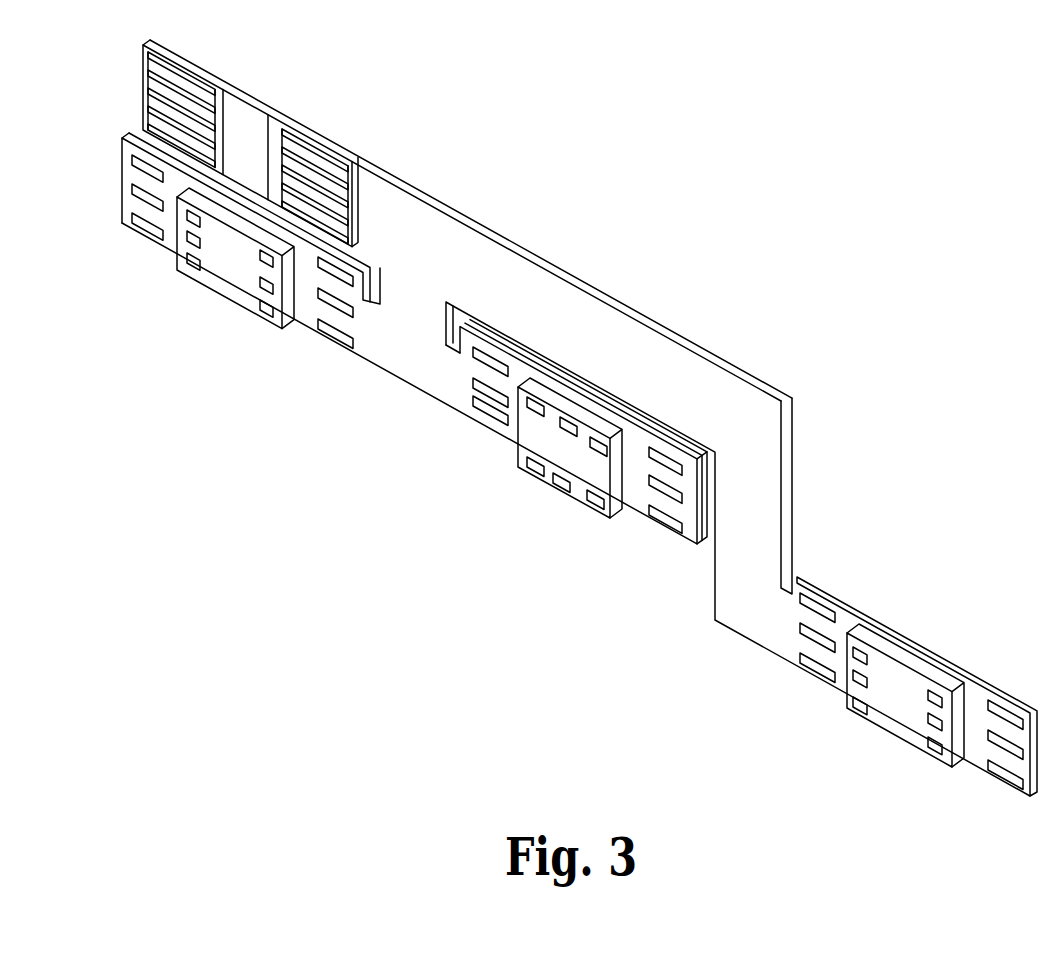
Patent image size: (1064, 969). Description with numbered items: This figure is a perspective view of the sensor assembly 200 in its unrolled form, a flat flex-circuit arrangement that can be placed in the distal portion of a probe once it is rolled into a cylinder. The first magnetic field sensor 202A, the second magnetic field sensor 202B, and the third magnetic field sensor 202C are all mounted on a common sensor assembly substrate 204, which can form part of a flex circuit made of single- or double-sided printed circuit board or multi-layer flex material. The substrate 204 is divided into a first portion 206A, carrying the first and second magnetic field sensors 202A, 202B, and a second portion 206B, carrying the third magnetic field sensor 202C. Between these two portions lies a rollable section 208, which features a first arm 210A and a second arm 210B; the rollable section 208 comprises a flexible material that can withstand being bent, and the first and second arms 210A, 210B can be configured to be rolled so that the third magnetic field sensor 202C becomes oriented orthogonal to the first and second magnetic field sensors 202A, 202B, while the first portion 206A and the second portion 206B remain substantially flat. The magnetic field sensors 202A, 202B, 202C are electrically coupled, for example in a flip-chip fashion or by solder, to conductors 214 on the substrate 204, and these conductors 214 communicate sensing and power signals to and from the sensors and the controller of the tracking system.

The sensor assembly 200 is at (463, 110).
The first magnetic field sensor 202A is at (230, 288).
The second magnetic field sensor 202B is at (586, 485).
The third magnetic field sensor 202C is at (901, 729).
The sensor assembly substrate 204 is at (245, 113).
The first portion 206A is at (407, 376).
The second portion 206B is at (975, 695).
The rollable section 208 is at (593, 308).
The first arm 210A is at (433, 320).
The second arm 210B is at (776, 523).
The conductors 214 is at (143, 228).